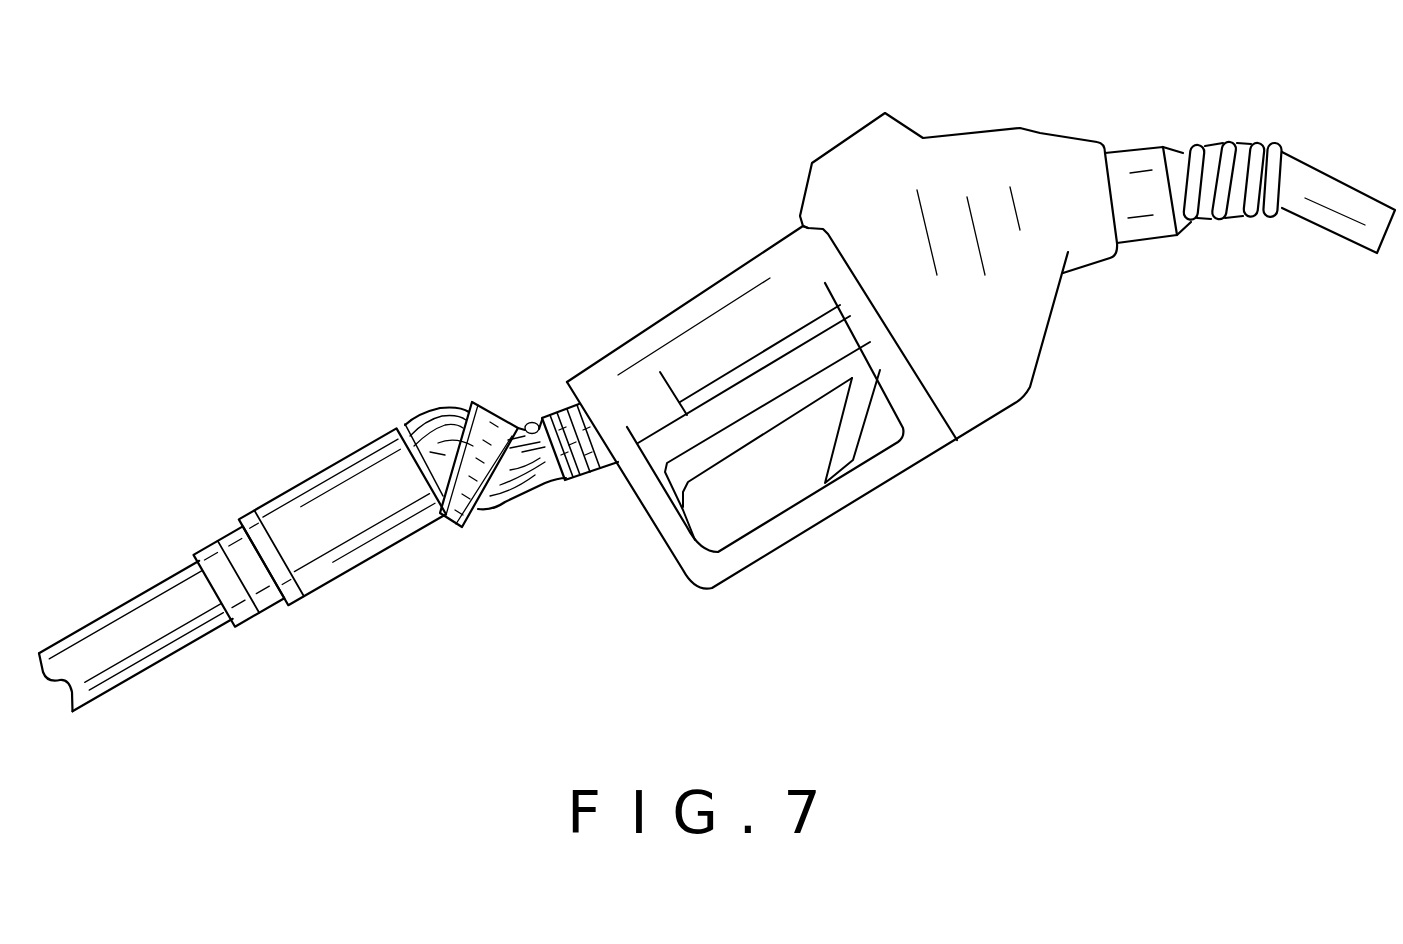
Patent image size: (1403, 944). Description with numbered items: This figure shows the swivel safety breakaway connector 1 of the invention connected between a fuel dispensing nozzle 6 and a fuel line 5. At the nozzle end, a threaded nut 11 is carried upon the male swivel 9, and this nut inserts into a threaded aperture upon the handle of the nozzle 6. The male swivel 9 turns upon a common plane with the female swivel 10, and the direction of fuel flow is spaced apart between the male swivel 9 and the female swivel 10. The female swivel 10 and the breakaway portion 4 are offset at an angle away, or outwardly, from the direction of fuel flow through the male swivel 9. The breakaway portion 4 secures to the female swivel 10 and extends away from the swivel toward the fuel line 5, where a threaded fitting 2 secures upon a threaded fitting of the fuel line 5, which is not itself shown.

The fuel dispensing nozzle assembly 1 is at (370, 198).
The threaded fitting 2 is at (267, 598).
The breakaway portion 4 is at (355, 557).
The fuel line 5 is at (128, 680).
The nozzle 6 is at (998, 153).
The male swivel 9 is at (525, 485).
The female swivel 10 is at (440, 432).
The threaded nut 11 is at (560, 413).